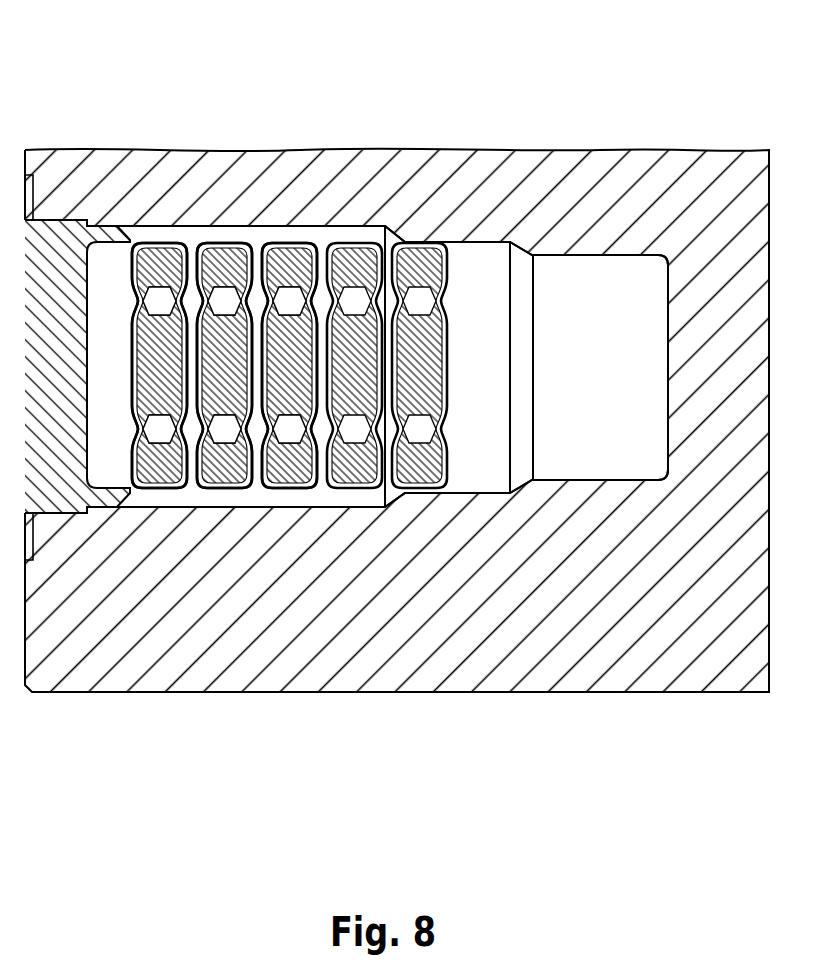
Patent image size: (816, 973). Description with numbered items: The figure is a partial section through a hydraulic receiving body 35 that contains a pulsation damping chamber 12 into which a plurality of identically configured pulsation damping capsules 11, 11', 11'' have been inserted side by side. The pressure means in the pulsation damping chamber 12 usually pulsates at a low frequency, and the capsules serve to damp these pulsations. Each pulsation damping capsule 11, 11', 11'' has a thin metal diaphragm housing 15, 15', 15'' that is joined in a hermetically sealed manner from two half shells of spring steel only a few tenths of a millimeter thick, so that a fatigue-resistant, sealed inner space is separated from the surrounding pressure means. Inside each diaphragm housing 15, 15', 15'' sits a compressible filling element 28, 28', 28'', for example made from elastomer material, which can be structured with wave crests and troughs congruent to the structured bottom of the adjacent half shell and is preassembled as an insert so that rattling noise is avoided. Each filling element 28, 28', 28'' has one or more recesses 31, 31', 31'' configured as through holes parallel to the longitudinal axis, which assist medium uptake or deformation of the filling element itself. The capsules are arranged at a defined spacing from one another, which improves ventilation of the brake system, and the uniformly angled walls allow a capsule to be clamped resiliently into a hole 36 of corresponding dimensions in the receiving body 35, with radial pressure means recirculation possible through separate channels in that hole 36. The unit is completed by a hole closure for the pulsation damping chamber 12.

The pulsation damping capsule 11 is at (155, 268).
The pulsation damping capsule 11' is at (220, 268).
The pulsation damping capsule 11'' is at (285, 268).
The recess 31 is at (163, 202).
The recess 31' is at (232, 202).
The recess 31'' is at (299, 202).
The pulsation damping chamber 12 is at (478, 273).
The receiving body 35 is at (563, 193).
The hole 36 is at (588, 257).
The filling element 28 is at (153, 585).
The filling element 28' is at (216, 585).
The filling element 28'' is at (280, 585).
The diaphragm housing 15 is at (159, 518).
The diaphragm housing 15' is at (227, 518).
The diaphragm housing 15'' is at (295, 518).